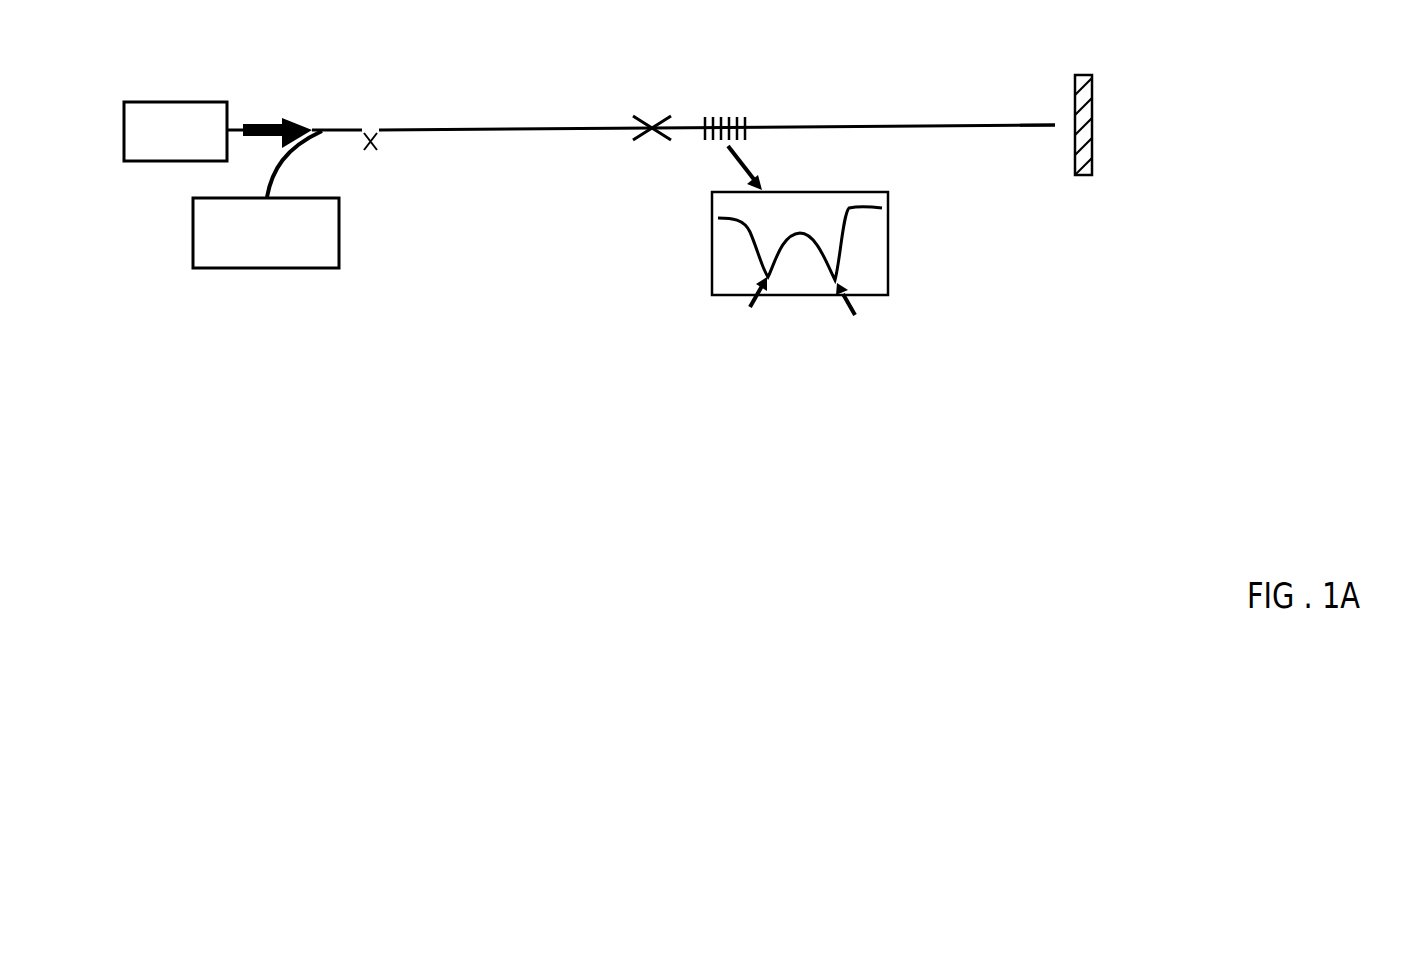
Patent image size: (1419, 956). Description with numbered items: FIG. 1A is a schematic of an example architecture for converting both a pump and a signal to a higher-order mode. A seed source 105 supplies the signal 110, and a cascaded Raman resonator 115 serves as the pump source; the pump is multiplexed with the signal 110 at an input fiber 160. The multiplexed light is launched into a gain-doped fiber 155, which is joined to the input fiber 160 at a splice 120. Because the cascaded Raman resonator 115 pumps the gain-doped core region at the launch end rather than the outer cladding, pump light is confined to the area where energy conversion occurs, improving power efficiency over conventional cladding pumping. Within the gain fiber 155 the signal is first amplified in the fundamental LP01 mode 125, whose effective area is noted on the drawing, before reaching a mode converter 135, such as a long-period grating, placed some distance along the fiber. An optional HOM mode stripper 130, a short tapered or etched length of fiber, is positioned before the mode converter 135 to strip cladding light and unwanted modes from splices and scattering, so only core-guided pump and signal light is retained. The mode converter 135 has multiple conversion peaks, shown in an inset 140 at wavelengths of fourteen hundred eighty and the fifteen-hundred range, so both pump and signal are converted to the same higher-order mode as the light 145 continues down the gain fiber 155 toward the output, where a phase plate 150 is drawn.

The seed laser 105 is at (143, 102).
The signal 110 is at (255, 122).
The cascaded Raman resonator 115 is at (267, 268).
The splice 120 is at (366, 131).
The fundamental LP01 mode 125 is at (470, 192).
The HOM mode stripper 130 is at (655, 147).
The mode converter 135 is at (718, 117).
The grating transmission spectrum inset 140 is at (888, 250).
The light 145 is at (917, 103).
The phase plate 150 is at (1083, 75).
The gain-doped fiber 155 is at (1027, 125).
The input fiber 160 is at (327, 133).